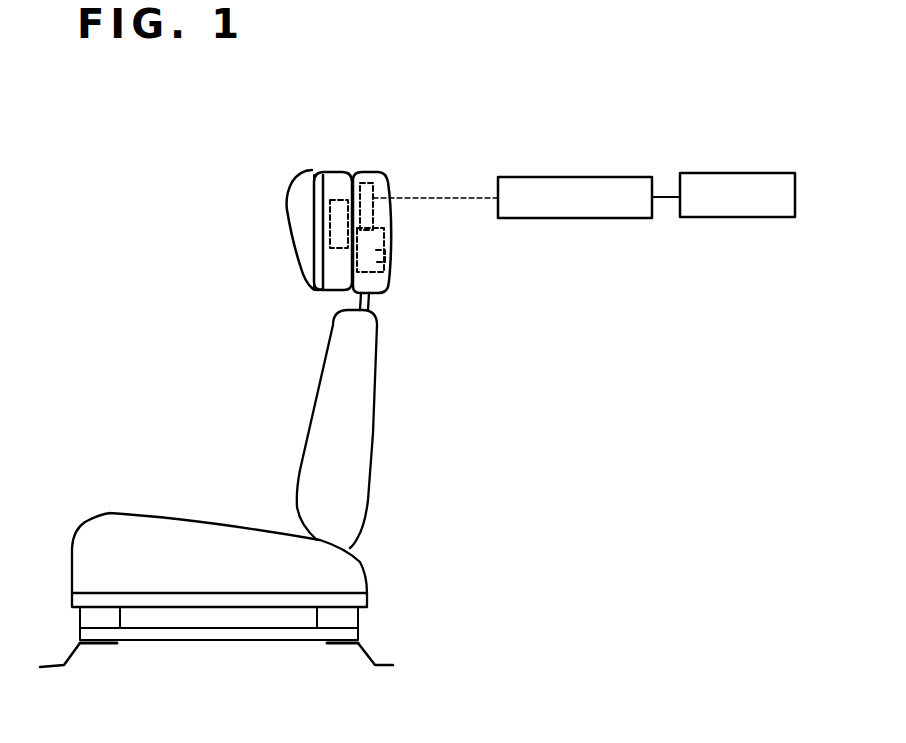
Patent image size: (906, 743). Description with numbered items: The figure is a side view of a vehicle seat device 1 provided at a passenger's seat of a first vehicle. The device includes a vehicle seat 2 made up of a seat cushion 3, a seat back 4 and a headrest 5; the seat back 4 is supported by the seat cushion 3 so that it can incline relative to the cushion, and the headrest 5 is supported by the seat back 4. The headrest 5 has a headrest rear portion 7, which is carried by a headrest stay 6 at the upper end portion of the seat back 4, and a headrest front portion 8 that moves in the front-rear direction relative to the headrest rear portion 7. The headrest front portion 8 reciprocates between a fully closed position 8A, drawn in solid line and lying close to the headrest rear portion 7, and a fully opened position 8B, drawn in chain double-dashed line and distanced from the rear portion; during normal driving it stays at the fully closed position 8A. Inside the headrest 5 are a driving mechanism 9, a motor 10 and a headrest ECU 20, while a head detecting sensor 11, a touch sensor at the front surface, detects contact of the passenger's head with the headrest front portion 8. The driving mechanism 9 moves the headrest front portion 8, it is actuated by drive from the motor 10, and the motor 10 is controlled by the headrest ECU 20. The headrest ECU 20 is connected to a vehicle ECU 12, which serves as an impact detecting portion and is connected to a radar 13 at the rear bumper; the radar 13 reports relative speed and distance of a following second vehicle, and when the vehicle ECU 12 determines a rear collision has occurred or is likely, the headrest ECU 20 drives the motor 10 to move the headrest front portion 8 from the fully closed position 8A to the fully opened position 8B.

The vehicle seat device 1 is at (152, 362).
The vehicle seat 2 is at (250, 452).
The seat cushion 3 is at (257, 530).
The seat back 4 is at (297, 466).
The headrest 5 is at (382, 132).
The headrest stay 6 is at (372, 309).
The headrest rear portion 7 is at (363, 172).
The headrest front portion 8 is at (335, 170).
The fully closed position 8A is at (331, 292).
The fully opened position 8B is at (297, 270).
The driving mechanism 9 is at (353, 224).
The motor 10 is at (387, 258).
The head detecting sensor 11 is at (330, 228).
The vehicle ECU 12 is at (598, 176).
The radar 13 is at (753, 173).
The headrest ECU 20 is at (383, 190).